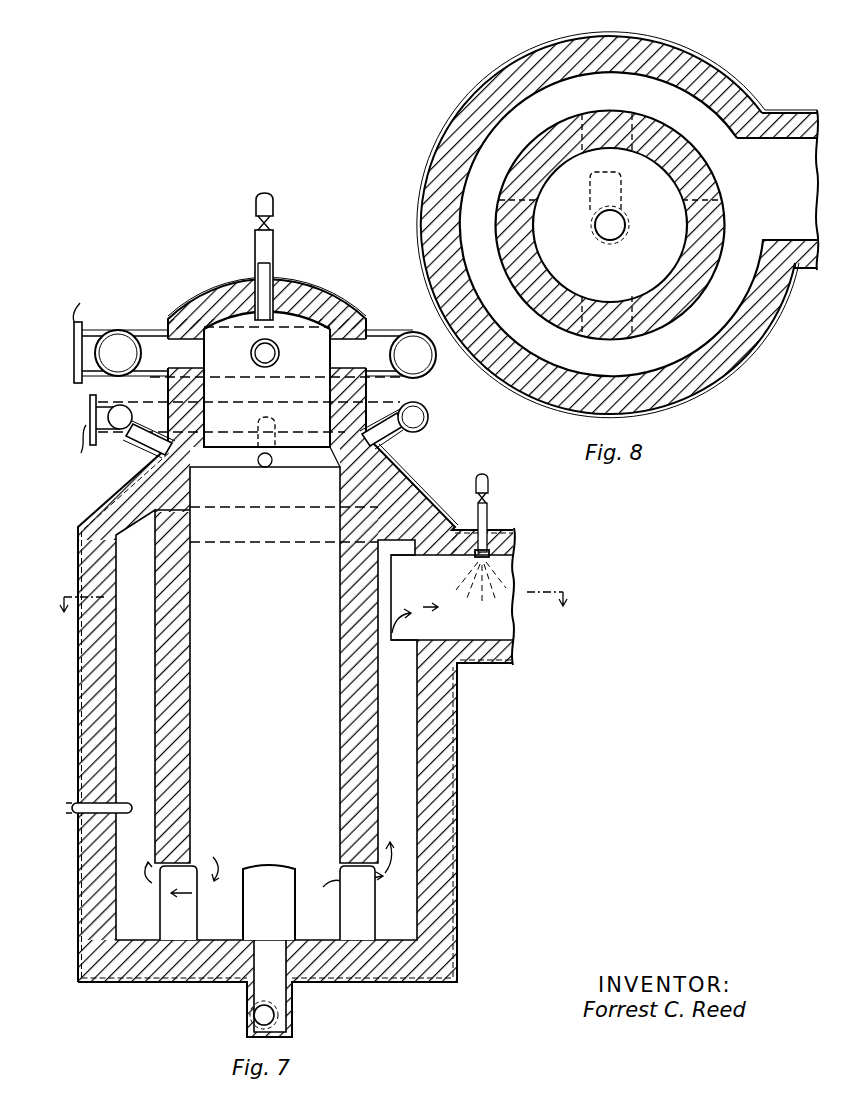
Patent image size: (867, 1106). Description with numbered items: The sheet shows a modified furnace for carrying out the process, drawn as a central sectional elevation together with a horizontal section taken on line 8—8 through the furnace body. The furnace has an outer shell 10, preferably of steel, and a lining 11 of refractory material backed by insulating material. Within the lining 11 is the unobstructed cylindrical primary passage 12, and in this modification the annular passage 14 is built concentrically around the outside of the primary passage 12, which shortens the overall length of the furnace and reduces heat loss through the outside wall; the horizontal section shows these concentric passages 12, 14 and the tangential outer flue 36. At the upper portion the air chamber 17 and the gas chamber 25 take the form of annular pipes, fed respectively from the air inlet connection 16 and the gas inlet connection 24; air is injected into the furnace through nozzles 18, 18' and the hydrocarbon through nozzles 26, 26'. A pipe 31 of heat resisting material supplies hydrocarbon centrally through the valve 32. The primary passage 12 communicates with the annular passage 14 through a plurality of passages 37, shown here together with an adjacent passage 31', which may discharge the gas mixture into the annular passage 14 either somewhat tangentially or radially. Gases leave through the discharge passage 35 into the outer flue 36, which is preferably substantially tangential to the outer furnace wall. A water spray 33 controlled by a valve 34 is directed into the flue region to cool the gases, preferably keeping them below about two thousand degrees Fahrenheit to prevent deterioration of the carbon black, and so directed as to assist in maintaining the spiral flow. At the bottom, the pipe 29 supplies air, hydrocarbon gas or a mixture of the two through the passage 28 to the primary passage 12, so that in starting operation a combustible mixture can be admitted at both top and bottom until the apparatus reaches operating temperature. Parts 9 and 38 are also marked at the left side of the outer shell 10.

In FIG. 7, the section line 8 is at (316, 592).
In FIG. 7, the bracket attachment 9 is at (72, 805).
In FIG. 7, the outer shell 10 is at (72, 784).
In FIG. 7, the furnace lining 11 is at (98, 746).
In FIG. 7, the primary passage 12 is at (318, 520).
In FIG. 8, the primary passage 12 is at (563, 186).
In FIG. 7, the annular passage 14 is at (402, 797).
In FIG. 8, the annular passage 14 is at (490, 200).
In FIG. 7, the air inlet pipe 16 is at (135, 366).
In FIG. 7, the air chamber 17 is at (418, 358).
In FIG. 7, the nozzle 18 is at (280, 352).
In FIG. 7, the nozzle 18' is at (335, 358).
In FIG. 7, the gas inlet pipe 24 is at (88, 416).
In FIG. 7, the gas chamber 25 is at (424, 424).
In FIG. 7, the nozzle 26 is at (252, 458).
In FIG. 7, the nozzle 26' is at (324, 472).
In FIG. 7, the passage 28 is at (268, 973).
In FIG. 8, the passage 28 is at (606, 230).
In FIG. 7, the pipe 29 is at (262, 1015).
In FIG. 8, the pipe 29 is at (589, 200).
In FIG. 7, the pipe 31 is at (287, 275).
In FIG. 7, the outlet tube 31' is at (340, 892).
In FIG. 7, the valve 32 is at (272, 219).
In FIG. 7, the water spray 33 is at (483, 555).
In FIG. 7, the valve 34 is at (483, 498).
In FIG. 7, the discharge passage 35 is at (413, 633).
In FIG. 7, the outer flue 36 is at (488, 630).
In FIG. 8, the outer flue 36 is at (773, 163).
In FIG. 7, the passage 37 is at (266, 880).
In FIG. 7, the passage 38 is at (92, 830).